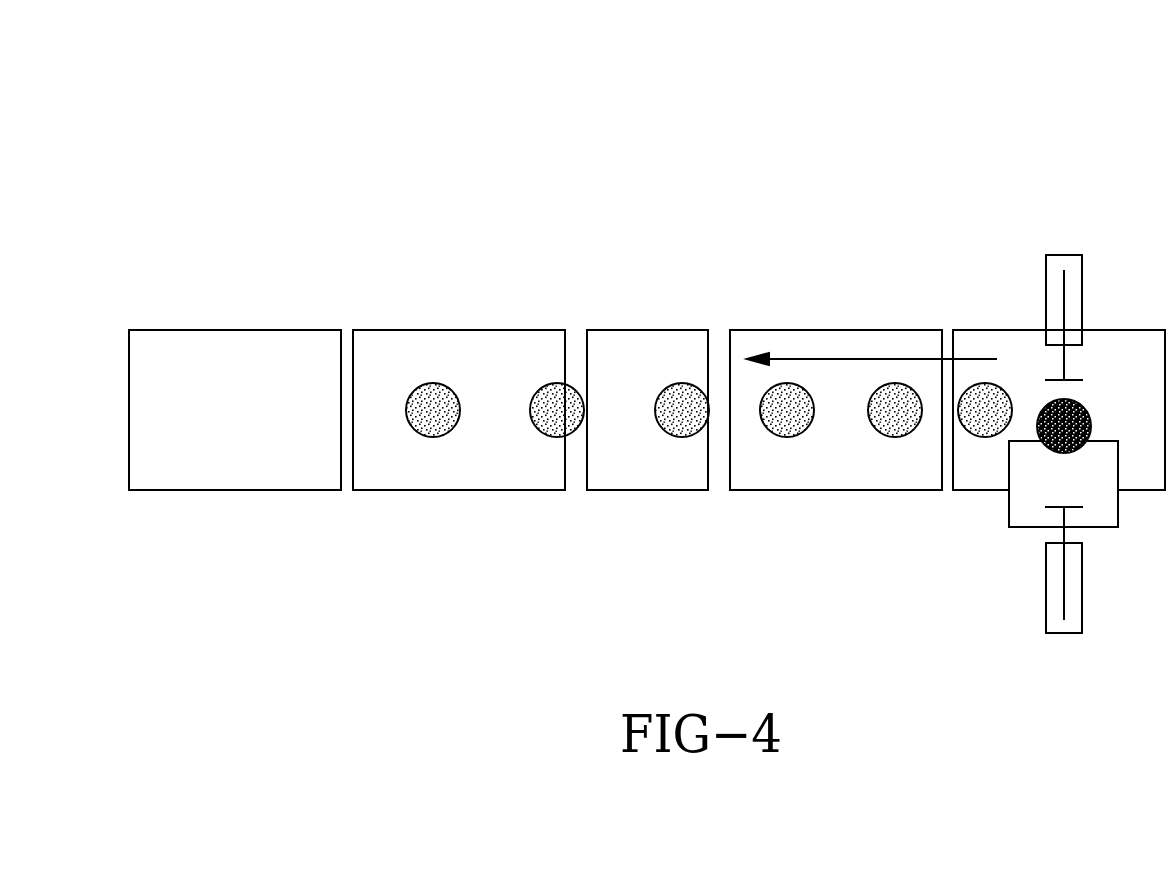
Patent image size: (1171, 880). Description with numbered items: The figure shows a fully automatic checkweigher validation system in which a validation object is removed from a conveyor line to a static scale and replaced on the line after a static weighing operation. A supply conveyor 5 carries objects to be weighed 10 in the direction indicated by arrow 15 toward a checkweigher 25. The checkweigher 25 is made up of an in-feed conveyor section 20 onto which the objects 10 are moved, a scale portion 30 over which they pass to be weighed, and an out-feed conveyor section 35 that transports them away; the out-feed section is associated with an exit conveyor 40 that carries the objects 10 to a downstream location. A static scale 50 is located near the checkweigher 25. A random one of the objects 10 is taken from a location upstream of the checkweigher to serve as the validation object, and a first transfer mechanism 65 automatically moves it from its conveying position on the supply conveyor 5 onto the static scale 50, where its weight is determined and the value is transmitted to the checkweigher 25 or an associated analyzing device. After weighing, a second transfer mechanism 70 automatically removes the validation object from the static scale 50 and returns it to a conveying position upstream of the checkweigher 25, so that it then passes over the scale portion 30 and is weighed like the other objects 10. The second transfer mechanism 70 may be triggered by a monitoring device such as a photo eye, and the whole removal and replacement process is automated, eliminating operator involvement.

The supply conveyor 5 is at (983, 330).
The objects to be weighed 10 is at (551, 418).
The arrow 15 is at (898, 359).
The in-feed conveyor section 20 is at (795, 330).
The checkweigher 25 is at (507, 148).
The scale portion 30 is at (645, 330).
The out-feed conveyor section 35 is at (461, 330).
The exit conveyor 40 is at (216, 330).
The static scale 50 is at (1009, 514).
The first transfer mechanism 65 is at (1085, 268).
The second transfer mechanism 70 is at (1083, 605).